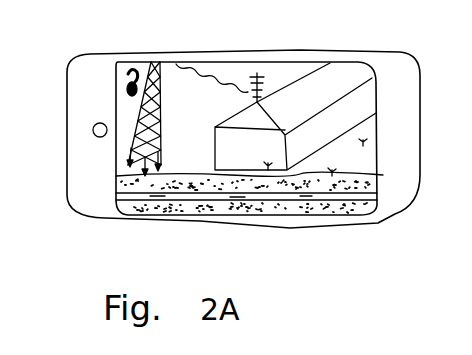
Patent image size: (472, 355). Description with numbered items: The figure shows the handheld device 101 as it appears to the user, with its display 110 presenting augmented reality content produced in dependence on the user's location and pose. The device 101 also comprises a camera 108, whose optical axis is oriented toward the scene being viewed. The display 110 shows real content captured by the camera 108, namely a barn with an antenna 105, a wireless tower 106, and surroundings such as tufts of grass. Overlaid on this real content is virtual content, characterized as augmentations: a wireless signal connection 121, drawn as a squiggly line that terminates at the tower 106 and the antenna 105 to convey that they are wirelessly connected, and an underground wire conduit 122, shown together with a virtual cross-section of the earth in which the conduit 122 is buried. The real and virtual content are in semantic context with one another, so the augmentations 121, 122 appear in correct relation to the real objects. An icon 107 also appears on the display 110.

The handheld device 101 is at (327, 243).
The display 110 is at (293, 58).
The underground wire conduit 122 is at (140, 203).
The wireless tower 106 is at (161, 95).
The wireless signal indicator 107 is at (125, 74).
The wireless signal connection 121 is at (217, 72).
The antenna 105 is at (258, 70).
The camera 108 is at (94, 136).